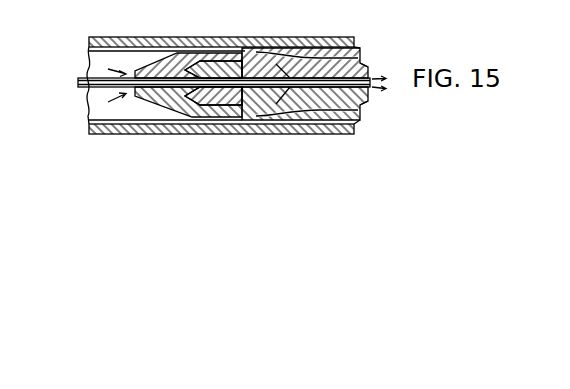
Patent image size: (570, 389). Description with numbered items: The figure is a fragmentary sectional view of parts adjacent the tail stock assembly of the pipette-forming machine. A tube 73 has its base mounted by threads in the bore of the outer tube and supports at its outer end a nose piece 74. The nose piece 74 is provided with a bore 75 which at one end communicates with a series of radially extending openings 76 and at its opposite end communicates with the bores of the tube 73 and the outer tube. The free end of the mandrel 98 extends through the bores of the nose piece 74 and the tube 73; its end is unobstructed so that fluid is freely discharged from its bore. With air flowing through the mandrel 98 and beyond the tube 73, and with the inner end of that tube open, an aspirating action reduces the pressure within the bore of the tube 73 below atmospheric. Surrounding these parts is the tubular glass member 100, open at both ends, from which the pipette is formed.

The tube 73 is at (369, 103).
The nose piece 74 is at (186, 62).
The bore 75 is at (219, 93).
The radially extending openings 76 is at (176, 98).
The capillary tube 98 is at (88, 88).
The tubular glass member 100 is at (108, 133).